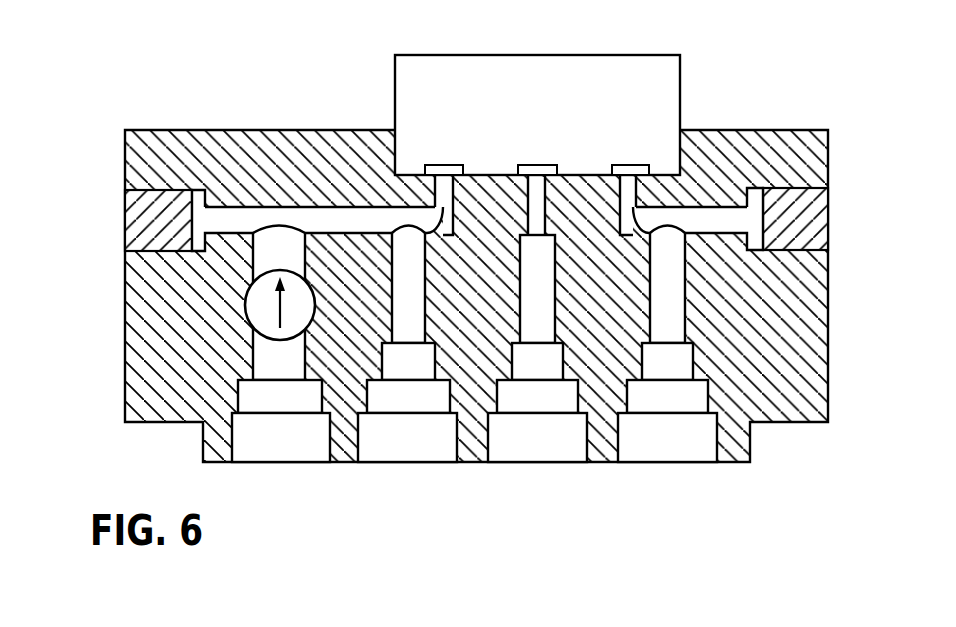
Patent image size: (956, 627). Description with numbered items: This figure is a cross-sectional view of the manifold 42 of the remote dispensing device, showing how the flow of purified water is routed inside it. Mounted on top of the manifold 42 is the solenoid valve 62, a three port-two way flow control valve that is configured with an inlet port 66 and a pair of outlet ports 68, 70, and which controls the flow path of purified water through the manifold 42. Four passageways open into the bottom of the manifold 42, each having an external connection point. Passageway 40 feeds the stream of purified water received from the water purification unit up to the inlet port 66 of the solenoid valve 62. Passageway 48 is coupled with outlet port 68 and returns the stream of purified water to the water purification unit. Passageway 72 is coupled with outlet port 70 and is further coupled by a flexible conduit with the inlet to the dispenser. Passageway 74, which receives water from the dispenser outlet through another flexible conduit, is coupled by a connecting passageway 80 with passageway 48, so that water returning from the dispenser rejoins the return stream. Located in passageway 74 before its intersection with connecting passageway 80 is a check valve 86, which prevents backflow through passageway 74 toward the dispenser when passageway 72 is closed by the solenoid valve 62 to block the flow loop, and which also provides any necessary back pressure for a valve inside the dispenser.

The manifold 42 is at (124, 302).
The solenoid valve 62 is at (395, 77).
The outlet port 68 is at (443, 165).
The inlet port 66 is at (531, 165).
The outlet port 70 is at (625, 165).
The connecting passageway 80 is at (328, 213).
The passageway 74 is at (266, 360).
The passageway 48 is at (410, 291).
The passageway 40 is at (543, 298).
The passageway 72 is at (668, 305).
The check valve 86 is at (246, 302).